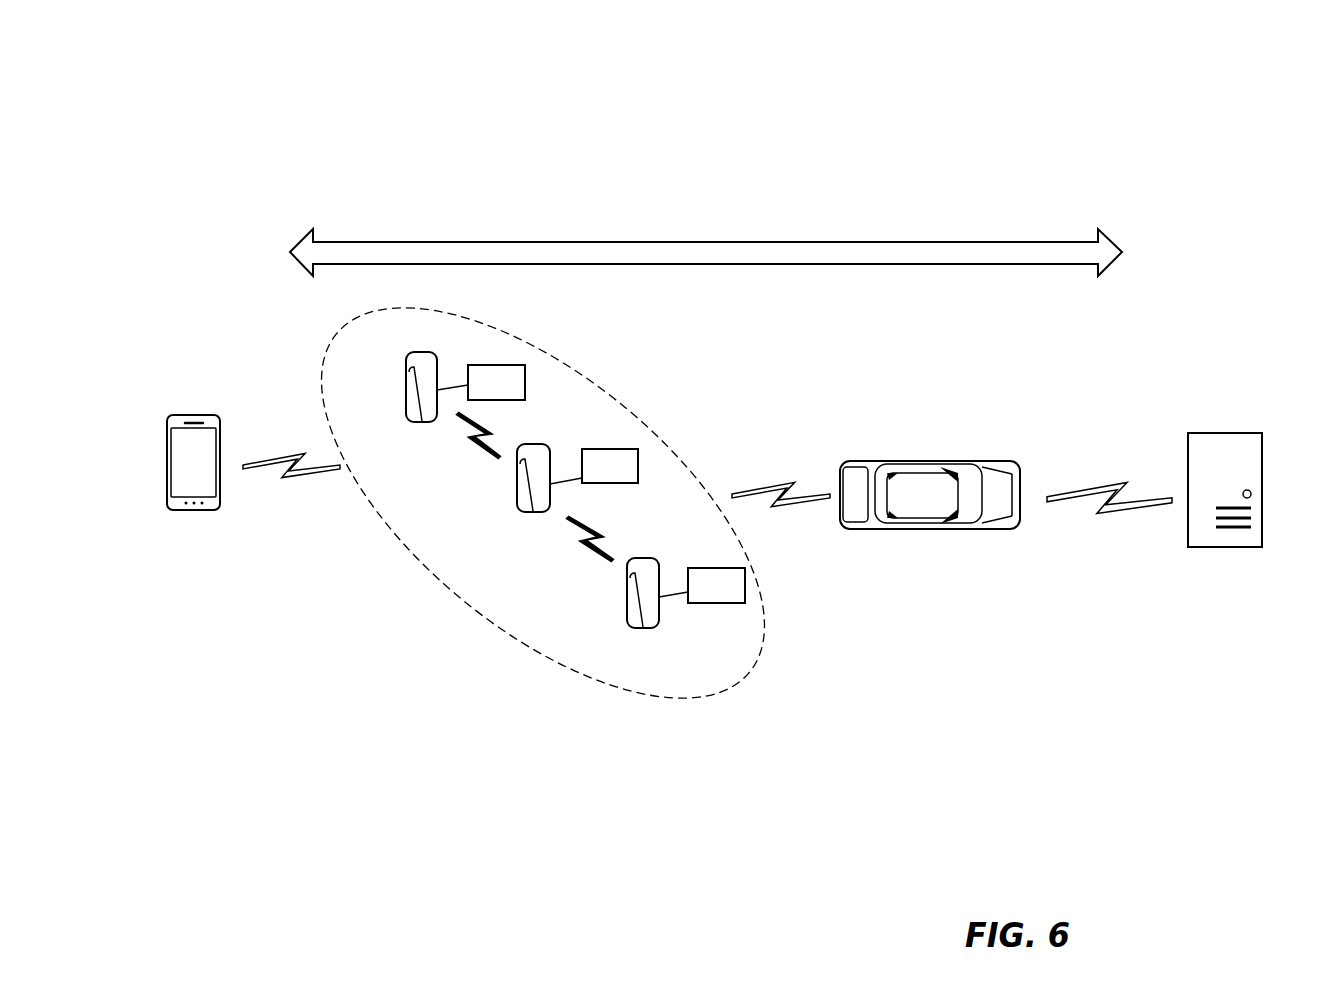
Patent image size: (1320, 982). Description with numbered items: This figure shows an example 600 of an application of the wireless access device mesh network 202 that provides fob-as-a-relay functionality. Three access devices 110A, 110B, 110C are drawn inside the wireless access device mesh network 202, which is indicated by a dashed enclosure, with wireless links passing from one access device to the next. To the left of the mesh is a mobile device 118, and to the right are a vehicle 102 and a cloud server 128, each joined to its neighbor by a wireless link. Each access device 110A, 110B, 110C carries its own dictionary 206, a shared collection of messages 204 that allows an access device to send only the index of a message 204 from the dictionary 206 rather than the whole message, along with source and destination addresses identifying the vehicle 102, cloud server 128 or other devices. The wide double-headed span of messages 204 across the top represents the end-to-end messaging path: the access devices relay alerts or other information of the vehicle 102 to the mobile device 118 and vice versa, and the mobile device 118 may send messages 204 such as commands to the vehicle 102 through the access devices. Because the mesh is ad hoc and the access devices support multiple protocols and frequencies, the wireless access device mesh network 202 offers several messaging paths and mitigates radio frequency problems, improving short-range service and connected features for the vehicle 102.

The example 600 is at (258, 55).
The message 204 is at (690, 293).
The wireless access device mesh network 202 is at (515, 621).
The access device 110A is at (445, 450).
The access device 110B is at (510, 543).
The access device 110C is at (618, 659).
The dictionary 206 is at (482, 392).
The mobile device 118 is at (178, 539).
The vehicle 102 is at (907, 503).
The cloud server 128 is at (1210, 576).